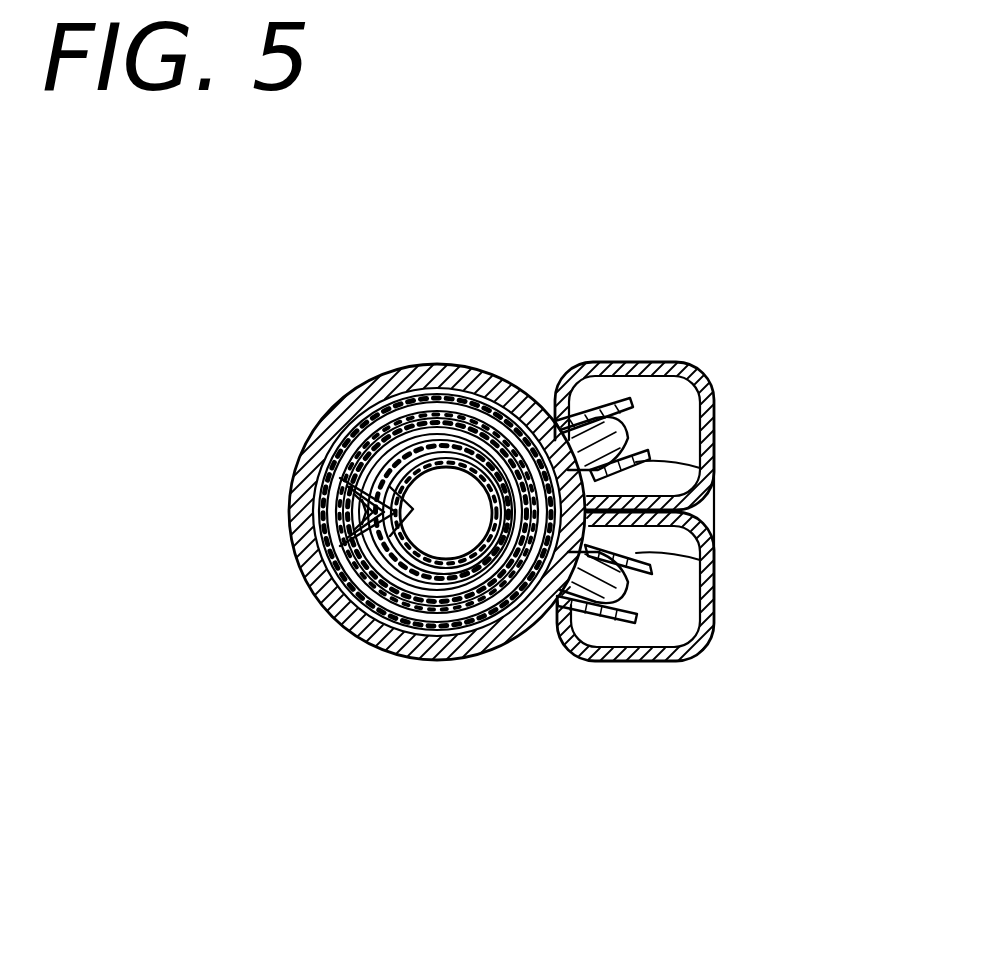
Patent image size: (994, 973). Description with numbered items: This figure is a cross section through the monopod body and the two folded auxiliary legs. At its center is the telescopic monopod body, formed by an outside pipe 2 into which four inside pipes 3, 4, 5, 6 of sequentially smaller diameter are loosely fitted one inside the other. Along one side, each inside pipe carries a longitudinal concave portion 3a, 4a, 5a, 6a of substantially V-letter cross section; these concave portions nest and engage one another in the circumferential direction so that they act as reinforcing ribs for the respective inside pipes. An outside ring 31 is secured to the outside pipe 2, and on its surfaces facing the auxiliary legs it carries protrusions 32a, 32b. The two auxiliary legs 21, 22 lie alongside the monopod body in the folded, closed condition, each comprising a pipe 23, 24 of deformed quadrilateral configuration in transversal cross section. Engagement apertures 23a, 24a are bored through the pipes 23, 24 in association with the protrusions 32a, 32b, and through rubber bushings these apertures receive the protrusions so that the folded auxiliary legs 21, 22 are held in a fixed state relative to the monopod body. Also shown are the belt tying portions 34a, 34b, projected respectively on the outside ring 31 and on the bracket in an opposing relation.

The outside pipe 2 is at (335, 615).
The inside pipe 3 is at (360, 638).
The inside pipe 4 is at (390, 647).
The inside pipe 5 is at (387, 423).
The inside pipe 6 is at (445, 400).
The outside ring 31 is at (300, 490).
The concave portion 3a is at (333, 467).
The concave portion 4a is at (345, 475).
The concave portion 5a is at (370, 530).
The concave portion 6a is at (337, 567).
The auxiliary leg 21 is at (715, 420).
The auxiliary leg 22 is at (713, 607).
The pipe 23 is at (677, 363).
The engagement aperture 23a is at (537, 397).
The engagement aperture 24a is at (537, 623).
The pipe 24 is at (648, 657).
The protrusion 32a is at (608, 410).
The protrusion 32b is at (590, 655).
The belt tying portion 34a is at (707, 480).
The belt tying portion 34b is at (700, 570).